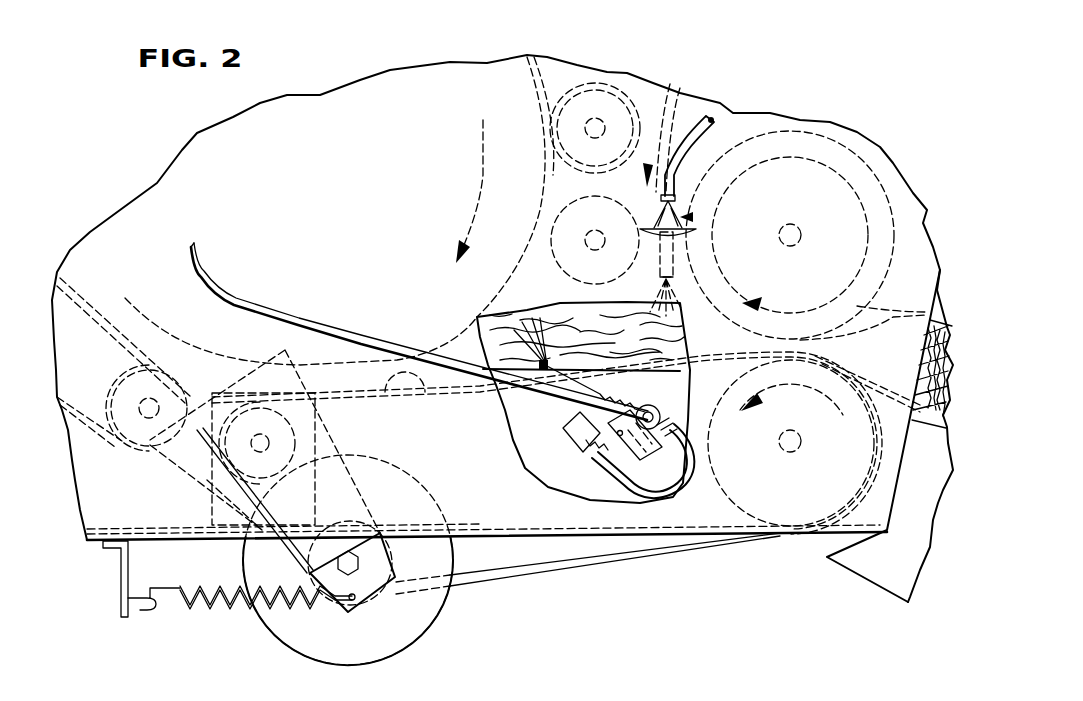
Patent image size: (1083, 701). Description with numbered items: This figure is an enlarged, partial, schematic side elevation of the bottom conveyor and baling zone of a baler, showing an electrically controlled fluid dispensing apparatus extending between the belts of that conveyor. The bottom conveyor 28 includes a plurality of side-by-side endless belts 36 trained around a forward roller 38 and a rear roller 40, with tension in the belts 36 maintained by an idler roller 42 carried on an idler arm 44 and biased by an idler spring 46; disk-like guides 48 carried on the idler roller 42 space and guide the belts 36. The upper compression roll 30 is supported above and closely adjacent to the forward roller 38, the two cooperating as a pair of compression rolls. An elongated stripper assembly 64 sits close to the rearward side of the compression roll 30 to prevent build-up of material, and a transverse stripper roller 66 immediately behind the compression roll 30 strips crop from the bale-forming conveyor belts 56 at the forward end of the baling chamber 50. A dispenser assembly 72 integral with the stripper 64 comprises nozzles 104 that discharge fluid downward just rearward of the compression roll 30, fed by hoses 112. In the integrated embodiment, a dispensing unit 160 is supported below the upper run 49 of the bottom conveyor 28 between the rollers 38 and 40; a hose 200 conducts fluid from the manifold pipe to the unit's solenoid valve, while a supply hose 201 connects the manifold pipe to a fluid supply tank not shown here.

The bottom conveyor 28 is at (720, 560).
The upper compression roll 30 is at (862, 160).
The endless belts 36 is at (600, 568).
The forward roller 38 is at (791, 443).
The rear roller 40 is at (297, 442).
The idler roller 42 is at (447, 562).
The idler arm 44 is at (190, 464).
The idler spring 46 is at (227, 608).
The disk-like guides 48 is at (384, 459).
The upper run 49 is at (428, 391).
The baling chamber 50 is at (228, 170).
The bale-forming conveyor belts 56 is at (88, 418).
The stripper assembly 64 is at (692, 217).
The stripper roller 66 is at (552, 212).
The dispenser assembly 72 is at (681, 127).
The nozzles 104 is at (675, 254).
The hoses 112 is at (690, 147).
The dispensing unit 160 is at (576, 461).
The hose 200 is at (629, 477).
The supply hose 201 is at (298, 325).